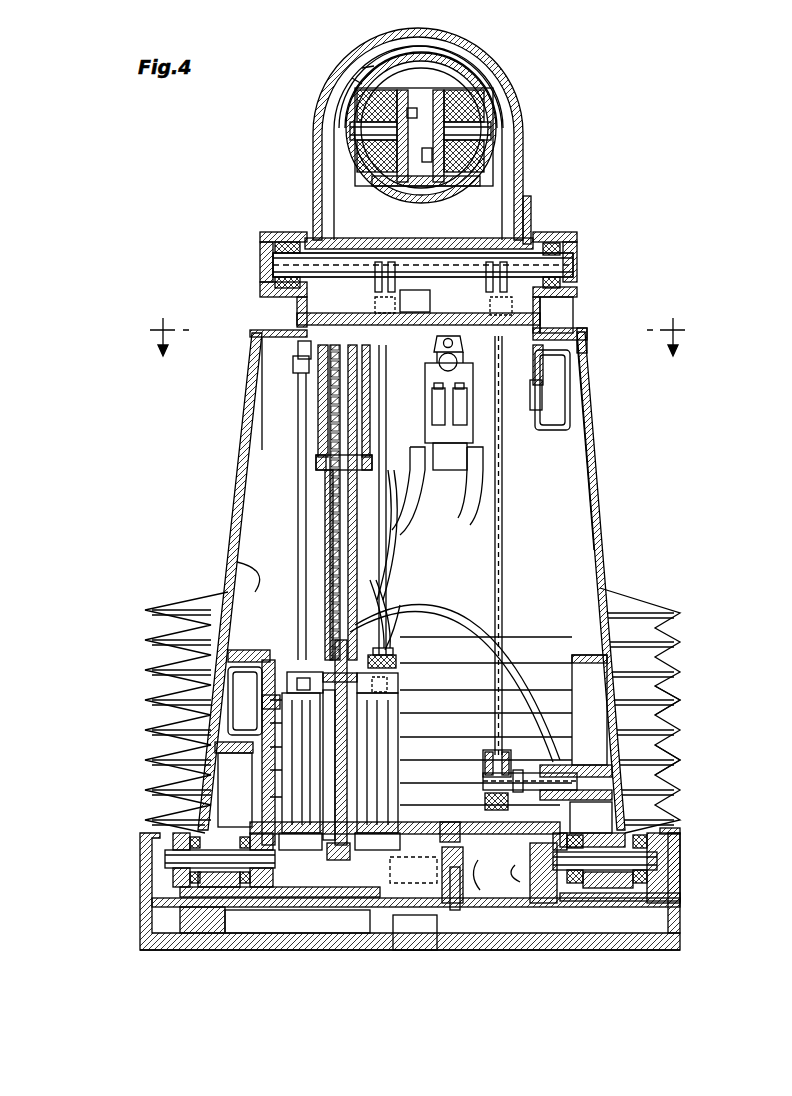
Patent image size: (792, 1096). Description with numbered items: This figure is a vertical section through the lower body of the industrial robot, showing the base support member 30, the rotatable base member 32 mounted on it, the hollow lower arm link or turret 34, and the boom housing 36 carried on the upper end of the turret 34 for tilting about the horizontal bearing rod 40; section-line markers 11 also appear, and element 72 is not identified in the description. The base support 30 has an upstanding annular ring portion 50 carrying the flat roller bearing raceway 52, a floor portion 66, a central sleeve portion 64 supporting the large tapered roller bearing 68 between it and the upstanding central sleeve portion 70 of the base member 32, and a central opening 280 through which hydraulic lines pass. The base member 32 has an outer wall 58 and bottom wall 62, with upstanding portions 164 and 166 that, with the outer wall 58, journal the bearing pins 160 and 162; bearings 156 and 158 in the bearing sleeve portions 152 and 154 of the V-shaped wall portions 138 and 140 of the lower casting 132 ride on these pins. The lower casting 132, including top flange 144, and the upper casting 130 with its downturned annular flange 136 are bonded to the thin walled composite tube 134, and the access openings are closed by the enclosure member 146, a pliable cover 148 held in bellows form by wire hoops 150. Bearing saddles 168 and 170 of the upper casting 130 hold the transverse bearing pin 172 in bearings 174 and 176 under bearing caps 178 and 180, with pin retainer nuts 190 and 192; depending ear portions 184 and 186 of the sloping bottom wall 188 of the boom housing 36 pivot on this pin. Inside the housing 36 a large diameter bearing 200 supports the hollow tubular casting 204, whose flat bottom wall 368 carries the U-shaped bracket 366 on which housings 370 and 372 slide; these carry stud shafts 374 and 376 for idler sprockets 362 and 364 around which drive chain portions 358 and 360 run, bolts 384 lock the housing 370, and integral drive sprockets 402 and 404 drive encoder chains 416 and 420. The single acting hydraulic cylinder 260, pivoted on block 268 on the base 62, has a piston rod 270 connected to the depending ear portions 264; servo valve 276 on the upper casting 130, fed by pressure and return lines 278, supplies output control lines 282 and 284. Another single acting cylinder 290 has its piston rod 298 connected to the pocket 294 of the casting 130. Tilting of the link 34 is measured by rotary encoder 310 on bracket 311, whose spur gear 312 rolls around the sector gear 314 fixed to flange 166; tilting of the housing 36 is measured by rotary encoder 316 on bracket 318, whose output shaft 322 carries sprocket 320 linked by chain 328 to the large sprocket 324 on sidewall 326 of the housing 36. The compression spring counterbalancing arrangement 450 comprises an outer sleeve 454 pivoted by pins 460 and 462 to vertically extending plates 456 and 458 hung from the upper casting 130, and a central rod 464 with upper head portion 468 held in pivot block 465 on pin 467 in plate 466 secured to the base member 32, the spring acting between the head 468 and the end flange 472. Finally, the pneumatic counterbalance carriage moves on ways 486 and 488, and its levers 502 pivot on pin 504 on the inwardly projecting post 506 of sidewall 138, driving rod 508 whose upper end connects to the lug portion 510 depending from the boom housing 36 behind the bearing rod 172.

The section line 11- 11 is at (419, 334).
The base support member 30 is at (152, 948).
The base member 32 is at (684, 878).
The lower arm link 34 is at (606, 470).
The boom housing 36 is at (312, 204).
The bearing rod 40 is at (572, 260).
The annular ring portion 50 is at (154, 916).
The roller bearing raceway 52 is at (182, 890).
The outer wall 58 is at (674, 836).
The bottom wall 62 is at (514, 862).
The central sleeve portion 64 is at (458, 894).
The floor portion 66 is at (312, 943).
The tapered roller bearing 68 is at (444, 890).
The central sleeve portion 70 is at (480, 856).
The plate 72 is at (684, 896).
The upper casting 130 is at (580, 328).
The lower casting 132 is at (237, 562).
The thin walled tube 134 is at (606, 506).
The downturned annular flange 136 is at (588, 348).
The V-shaped wall portion 138 is at (662, 708).
The V-shaped wall portion 140 is at (152, 742).
The top flange 144 is at (454, 598).
The enclosure member 146 is at (650, 594).
The cover 148 is at (667, 750).
The wire hoops 150 is at (670, 658).
The bearing sleeve portion 152 is at (600, 888).
The bearing sleeve portion 154 is at (238, 920).
The bearing 156 is at (582, 836).
The bearing 158 is at (222, 832).
The bearing pin 160 is at (662, 856).
The bearing pin 162 is at (172, 858).
The upstanding portion 164 is at (542, 894).
The upstanding wall portion 166 is at (262, 768).
The bearing saddle 168 is at (567, 294).
The bearing saddle 170 is at (274, 288).
The bearing pin 172 is at (292, 262).
The bearings 174 is at (554, 241).
The bearings 176 is at (285, 242).
The bearing cap 178 is at (567, 234).
The bearing cap 180 is at (264, 236).
The depending ear portion 184 is at (576, 310).
The depending ear portion 186 is at (302, 314).
The sloping bottom wall portion 188 is at (398, 268).
The pin retainer nut 190 is at (577, 256).
The pin retainer nut 192 is at (264, 258).
The large diameter bearing 200 is at (320, 180).
The tubular casting 204 is at (360, 82).
The single acting hydraulic cylinder 260 is at (400, 722).
The depending ear portions 264 is at (420, 249).
The block 268 is at (442, 860).
The piston rod 270 is at (382, 554).
The servo valve 276 is at (482, 438).
The hydraulic pressure and return lines 278 is at (468, 402).
The central opening 280 is at (415, 932).
The output control line 282 is at (434, 514).
The output control line 284 is at (485, 510).
The single acting hydraulic cylinder 290 is at (290, 694).
The pocket 294 is at (300, 354).
The piston rod 298 is at (260, 494).
The rotary encoder 310 is at (234, 668).
The bracket 311 is at (242, 723).
The spur gear 312 is at (290, 664).
The sector gear 314 is at (264, 748).
The rotary encoder 316 is at (570, 423).
The bracket 318 is at (570, 374).
The sprocket 320 is at (570, 408).
The output shaft 322 is at (564, 390).
The large sprocket 324 is at (531, 214).
The sidewall 326 is at (512, 163).
The chain 328 is at (488, 348).
The drive chain portion 358 is at (508, 92).
The drive chain portion 360 is at (350, 106).
The idler sprocket 362 is at (495, 108).
The idler sprocket 364 is at (348, 126).
The U-shaped bracket 366 is at (404, 184).
The flat bottom wall portion 368 is at (382, 186).
The housing 370 is at (472, 60).
The housing 372 is at (374, 66).
The stud shaft 374 is at (490, 122).
The stud shaft 376 is at (354, 146).
The bolts 384 is at (444, 184).
The drive sprocket 402 is at (490, 144).
The drive sprocket 404 is at (364, 160).
The chain 416 is at (496, 74).
The chain 420 is at (362, 98).
The compression spring counterbalancing arrangement 450 is at (287, 446).
The outer sleeve 454 is at (328, 510).
The plate 456 is at (320, 406).
The plate 458 is at (390, 378).
The pin 460 is at (318, 460).
The pin 462 is at (394, 474).
The central rod 464 is at (337, 548).
The pivot block 465 is at (404, 604).
The plate 466 is at (359, 703).
The pin 467 is at (398, 660).
The head portion 468 is at (388, 310).
The end flange 472 is at (338, 650).
The way 486 is at (562, 810).
The way 488 is at (454, 820).
The levers 502 is at (500, 752).
The pin 504 is at (485, 779).
The post 506 is at (577, 768).
The rod 508 is at (505, 546).
The lug portion 510 is at (496, 268).